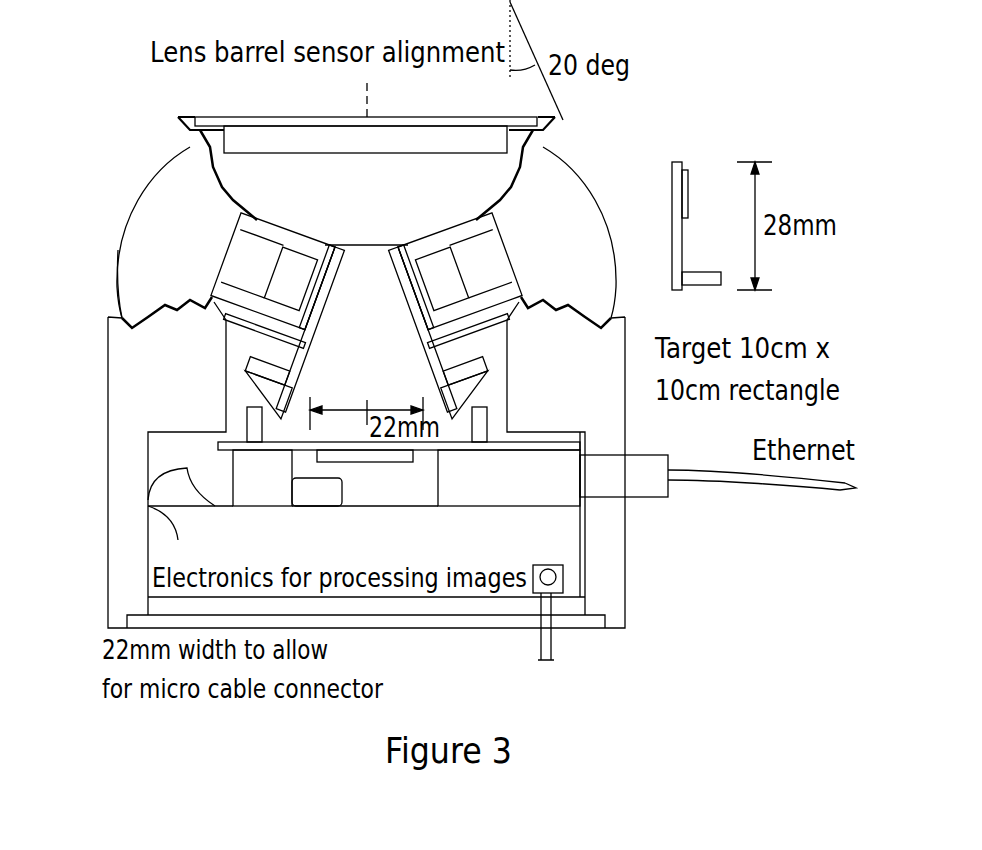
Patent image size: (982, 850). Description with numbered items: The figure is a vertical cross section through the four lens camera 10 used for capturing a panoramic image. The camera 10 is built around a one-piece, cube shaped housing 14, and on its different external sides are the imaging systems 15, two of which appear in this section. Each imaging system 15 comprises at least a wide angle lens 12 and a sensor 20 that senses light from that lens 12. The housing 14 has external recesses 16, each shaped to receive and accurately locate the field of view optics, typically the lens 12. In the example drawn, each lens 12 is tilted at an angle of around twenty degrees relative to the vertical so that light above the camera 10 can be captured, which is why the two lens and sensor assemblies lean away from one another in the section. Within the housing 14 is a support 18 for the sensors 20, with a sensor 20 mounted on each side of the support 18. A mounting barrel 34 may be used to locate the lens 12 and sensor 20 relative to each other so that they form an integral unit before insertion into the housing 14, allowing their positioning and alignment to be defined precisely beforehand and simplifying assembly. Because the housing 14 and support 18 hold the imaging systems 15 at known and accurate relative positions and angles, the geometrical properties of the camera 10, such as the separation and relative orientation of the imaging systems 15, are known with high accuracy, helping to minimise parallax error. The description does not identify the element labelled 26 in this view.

The camera 10 is at (108, 565).
The wide angle lens 12 is at (130, 212).
The housing 14 is at (612, 610).
The imaging system 15 is at (117, 268).
The external recess 16 is at (182, 136).
The support 18 is at (430, 377).
The sensor 20 is at (326, 297).
The power connector 26 is at (542, 556).
The mounting barrel 34 is at (247, 322).